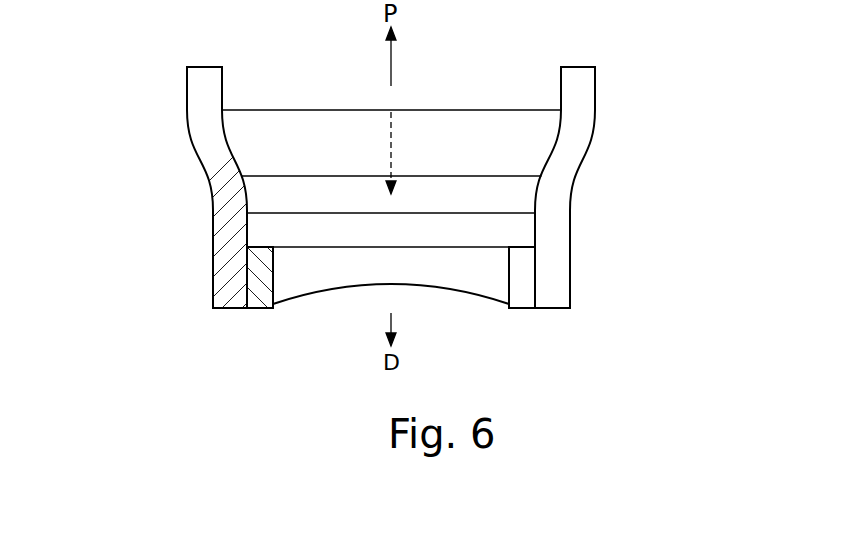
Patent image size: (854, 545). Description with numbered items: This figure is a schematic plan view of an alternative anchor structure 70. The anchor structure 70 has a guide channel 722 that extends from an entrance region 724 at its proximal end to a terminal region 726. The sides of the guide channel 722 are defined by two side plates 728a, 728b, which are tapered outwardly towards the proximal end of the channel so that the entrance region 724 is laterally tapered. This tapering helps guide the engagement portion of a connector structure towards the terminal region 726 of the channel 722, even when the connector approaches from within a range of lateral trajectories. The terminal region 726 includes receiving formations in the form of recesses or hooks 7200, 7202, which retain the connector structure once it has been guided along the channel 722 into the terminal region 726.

The anchor structure 70 is at (580, 304).
The guide channel 722 is at (391, 99).
The entrance region 724 is at (314, 204).
The terminal region 726 is at (341, 278).
The side plate 728a is at (203, 147).
The side plate 728b is at (573, 150).
The recess or hook 7200 is at (292, 279).
The recess or hook 7202 is at (490, 278).